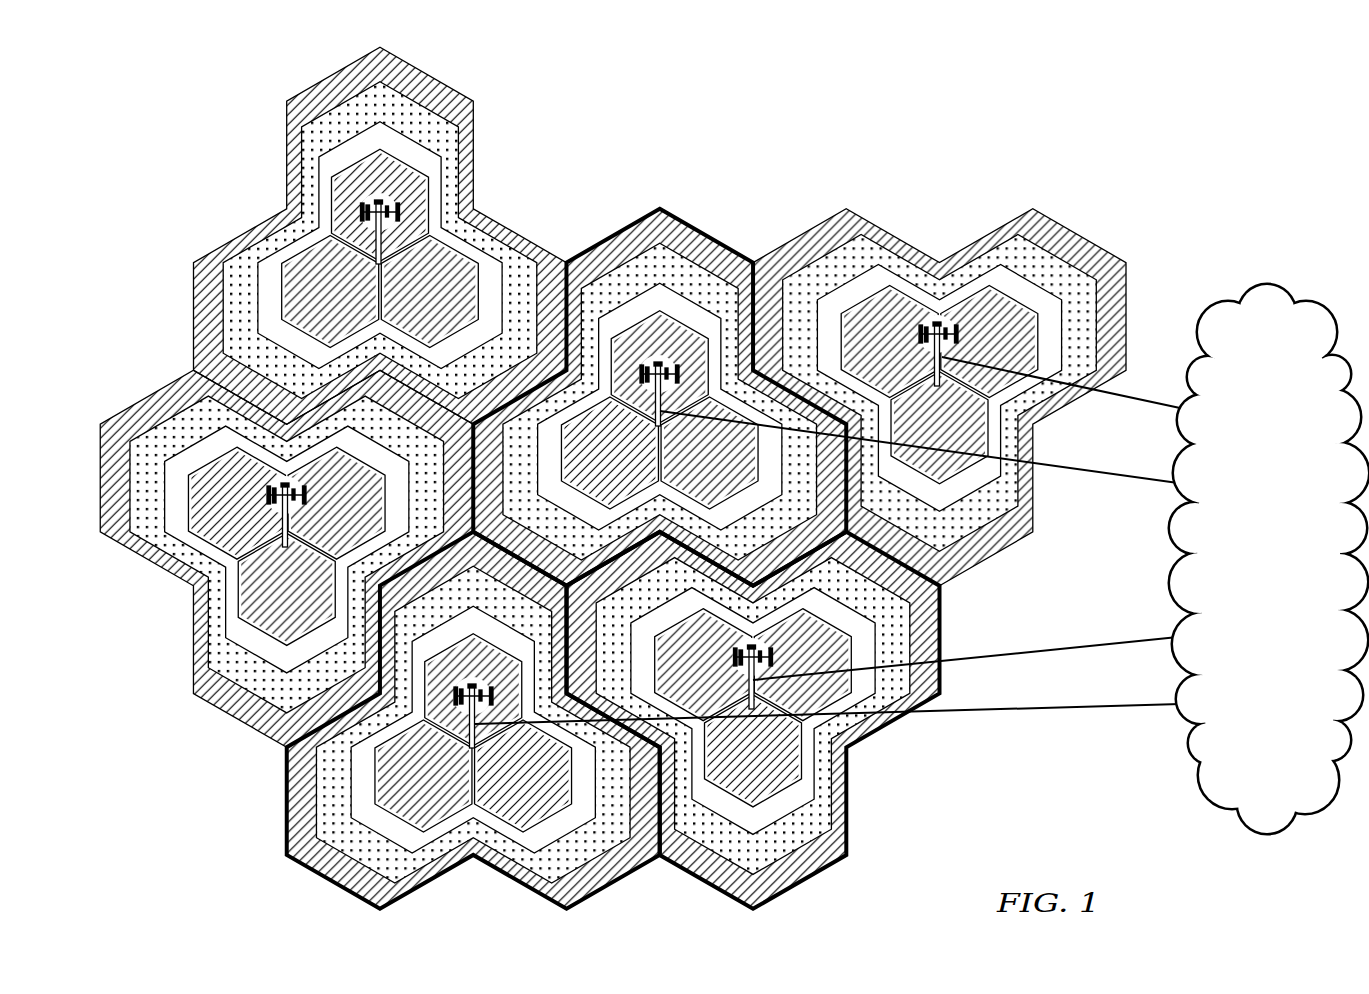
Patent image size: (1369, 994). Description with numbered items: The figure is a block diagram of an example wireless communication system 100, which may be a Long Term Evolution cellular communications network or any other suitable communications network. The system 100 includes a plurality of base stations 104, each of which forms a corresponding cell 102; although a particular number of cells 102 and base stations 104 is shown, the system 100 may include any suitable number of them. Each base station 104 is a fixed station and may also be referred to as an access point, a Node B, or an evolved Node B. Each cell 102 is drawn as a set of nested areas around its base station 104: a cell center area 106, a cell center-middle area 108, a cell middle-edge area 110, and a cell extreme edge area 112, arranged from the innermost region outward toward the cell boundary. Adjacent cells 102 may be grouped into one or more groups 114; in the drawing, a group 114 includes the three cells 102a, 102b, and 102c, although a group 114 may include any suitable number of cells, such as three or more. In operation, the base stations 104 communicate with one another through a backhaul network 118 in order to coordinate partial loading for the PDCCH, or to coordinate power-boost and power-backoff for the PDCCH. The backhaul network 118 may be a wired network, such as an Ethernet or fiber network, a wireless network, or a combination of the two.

The wireless communication system 100 is at (734, 482).
The cell 102 is at (380, 231).
The cell 102a is at (285, 787).
The cell 102b is at (753, 729).
The cell 102c is at (717, 208).
The base station 104 is at (398, 213).
The cell center area 106 is at (347, 180).
The cell center-middle area 108 is at (323, 207).
The cell middle-edge area 110 is at (413, 107).
The cell extreme edge area 112 is at (463, 110).
The group 114 is at (852, 812).
The backhaul network 118 is at (1287, 597).